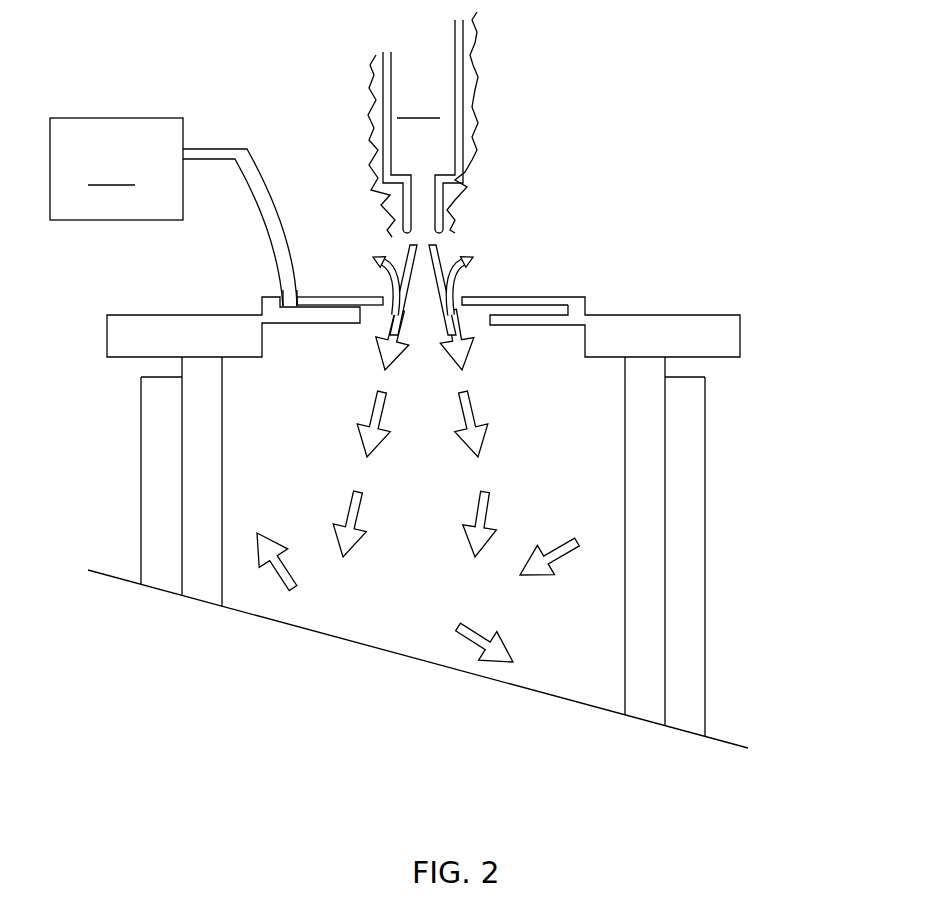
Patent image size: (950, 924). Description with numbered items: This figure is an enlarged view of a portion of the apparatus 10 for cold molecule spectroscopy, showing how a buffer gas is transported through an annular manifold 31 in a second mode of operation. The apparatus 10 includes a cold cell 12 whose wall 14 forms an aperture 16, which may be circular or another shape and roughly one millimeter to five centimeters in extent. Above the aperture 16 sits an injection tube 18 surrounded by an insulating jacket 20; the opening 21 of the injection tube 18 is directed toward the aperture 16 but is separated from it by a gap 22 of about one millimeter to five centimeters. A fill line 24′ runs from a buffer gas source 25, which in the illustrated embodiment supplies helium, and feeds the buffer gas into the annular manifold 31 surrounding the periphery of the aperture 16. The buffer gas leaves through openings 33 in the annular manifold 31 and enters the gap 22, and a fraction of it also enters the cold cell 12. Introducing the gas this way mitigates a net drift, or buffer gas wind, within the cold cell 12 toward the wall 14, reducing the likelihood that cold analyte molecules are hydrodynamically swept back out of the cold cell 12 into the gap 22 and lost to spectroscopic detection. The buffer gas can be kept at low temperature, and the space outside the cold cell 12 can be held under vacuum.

The apparatus 10 is at (773, 218).
The cold cell 12 is at (607, 540).
The wall 14 is at (588, 303).
The aperture 16 is at (463, 293).
The injection tube 18 is at (411, 142).
The insulating jacket 20 is at (492, 55).
The opening 21 is at (463, 200).
The gap 22 is at (443, 252).
The fill line 24′ is at (218, 148).
The buffer gas source 25 is at (116, 169).
The annular manifold 31 is at (280, 287).
The openings 33 is at (360, 300).